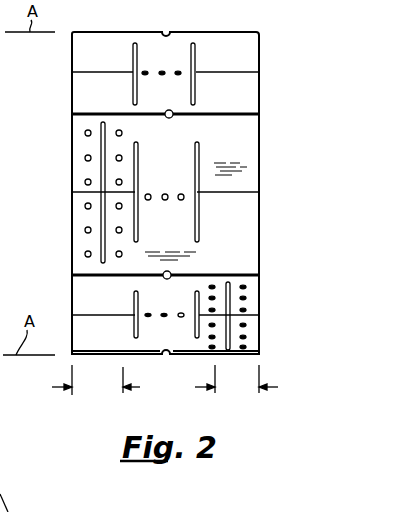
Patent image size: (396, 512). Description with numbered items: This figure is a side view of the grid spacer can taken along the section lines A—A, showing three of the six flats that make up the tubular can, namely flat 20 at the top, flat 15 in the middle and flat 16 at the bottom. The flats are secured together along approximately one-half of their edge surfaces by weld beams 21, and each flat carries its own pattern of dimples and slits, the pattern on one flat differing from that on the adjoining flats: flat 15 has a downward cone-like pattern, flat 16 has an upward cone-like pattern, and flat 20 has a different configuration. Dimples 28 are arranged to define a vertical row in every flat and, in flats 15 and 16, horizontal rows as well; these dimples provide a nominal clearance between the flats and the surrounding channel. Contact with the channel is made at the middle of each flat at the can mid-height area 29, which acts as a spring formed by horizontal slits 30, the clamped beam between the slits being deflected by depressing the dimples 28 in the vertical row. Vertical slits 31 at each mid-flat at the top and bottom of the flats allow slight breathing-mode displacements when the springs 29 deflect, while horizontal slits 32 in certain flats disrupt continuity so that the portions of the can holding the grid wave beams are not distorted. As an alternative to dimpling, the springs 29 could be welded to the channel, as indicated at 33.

The flat 15 is at (250, 160).
The flat 16 is at (250, 307).
The flat 20 is at (250, 81).
The weld beams 21 is at (108, 397).
The dimples 28 is at (178, 76).
The can mid-height area 29 is at (176, 63).
The horizontal slits 30 is at (197, 163).
The vertical slits 31 is at (97, 73).
The horizontal slits 32 is at (102, 242).
The weld 33 is at (162, 332).